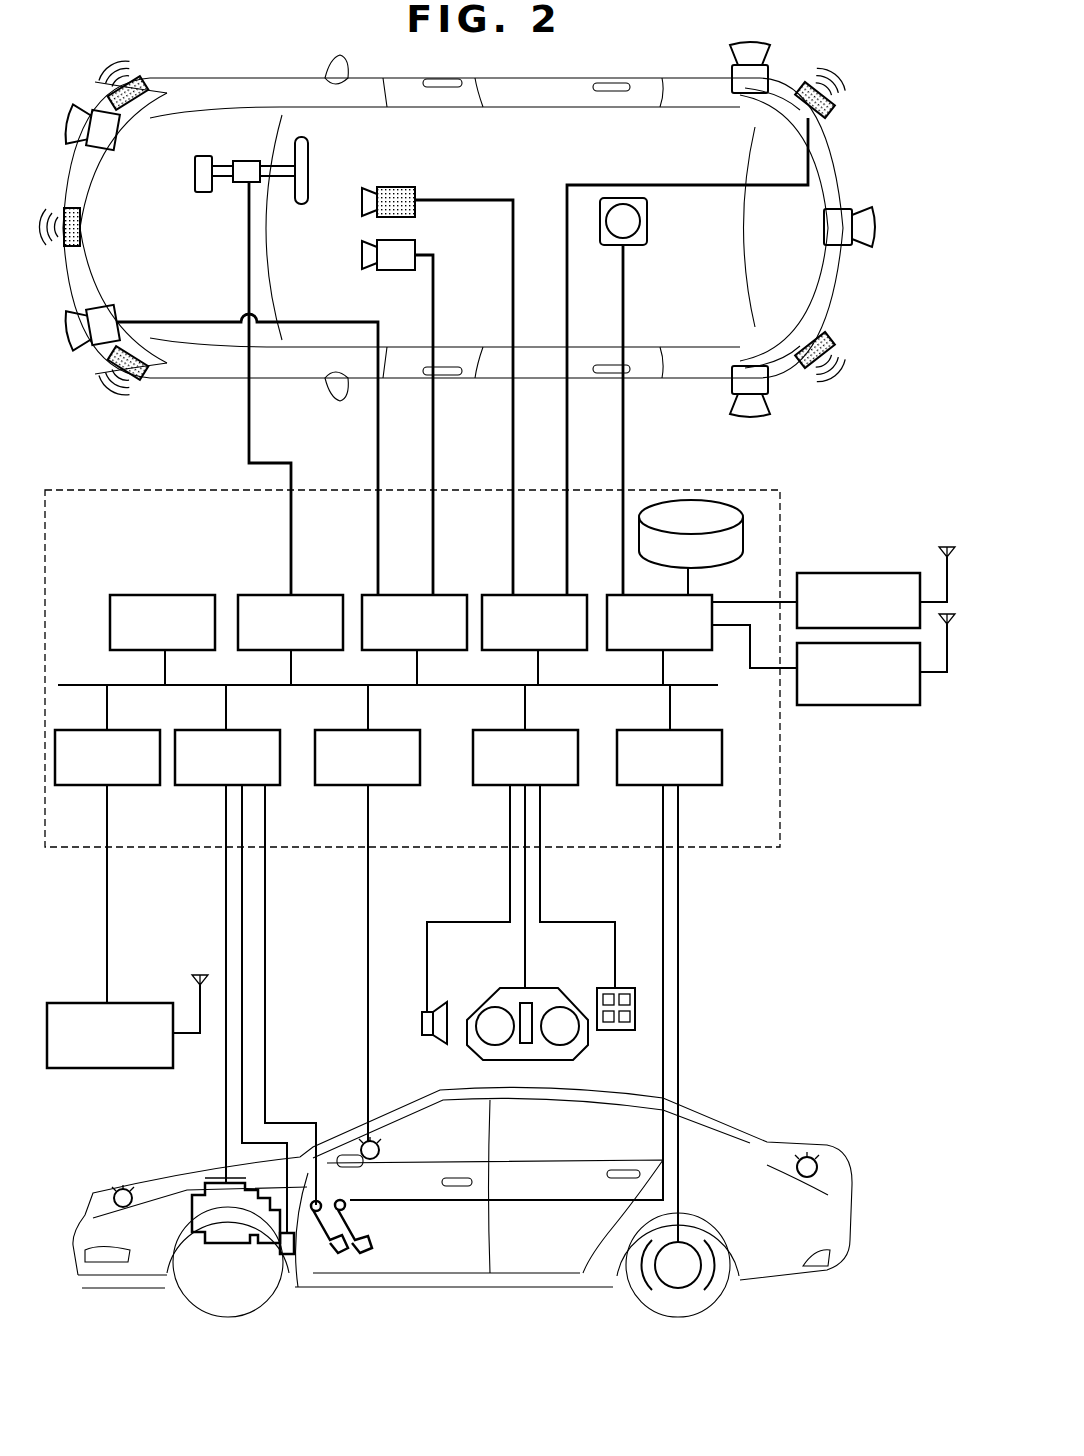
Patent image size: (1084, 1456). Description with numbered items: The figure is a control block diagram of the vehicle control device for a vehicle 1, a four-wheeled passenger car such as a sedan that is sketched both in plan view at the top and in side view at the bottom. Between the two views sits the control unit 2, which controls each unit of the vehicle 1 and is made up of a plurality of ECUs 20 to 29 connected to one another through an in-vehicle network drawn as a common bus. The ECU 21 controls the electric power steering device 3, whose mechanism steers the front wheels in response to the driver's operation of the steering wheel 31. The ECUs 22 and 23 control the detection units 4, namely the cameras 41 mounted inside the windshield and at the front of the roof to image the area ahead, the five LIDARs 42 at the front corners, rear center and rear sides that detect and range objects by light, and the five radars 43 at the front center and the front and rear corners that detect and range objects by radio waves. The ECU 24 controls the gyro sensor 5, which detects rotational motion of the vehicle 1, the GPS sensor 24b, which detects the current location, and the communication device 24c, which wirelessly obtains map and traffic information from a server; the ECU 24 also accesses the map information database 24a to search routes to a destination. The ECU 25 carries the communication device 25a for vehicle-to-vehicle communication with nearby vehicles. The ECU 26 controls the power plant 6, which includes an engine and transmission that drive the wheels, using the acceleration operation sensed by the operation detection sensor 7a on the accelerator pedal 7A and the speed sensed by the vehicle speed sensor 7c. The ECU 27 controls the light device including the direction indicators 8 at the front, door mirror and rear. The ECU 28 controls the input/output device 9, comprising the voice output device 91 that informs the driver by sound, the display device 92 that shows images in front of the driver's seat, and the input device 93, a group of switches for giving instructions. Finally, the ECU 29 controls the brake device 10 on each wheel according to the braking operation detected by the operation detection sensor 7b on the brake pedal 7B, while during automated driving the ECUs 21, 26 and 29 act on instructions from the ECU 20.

The vehicle 1 is at (860, 136).
The control unit 2 is at (750, 855).
The electric power steering device 3 is at (204, 194).
The steering wheel 31 is at (302, 205).
The detection units 4 is at (88, 84).
The detection unit (camera) 41 is at (420, 215).
The detection unit (LIDAR) 42 is at (116, 152).
The detection unit (radar) 43 is at (137, 108).
The gyro sensor 5 is at (650, 218).
The power plant 6 is at (196, 1183).
The operation detection sensor 7a is at (318, 1200).
The operation detection sensor 7b is at (345, 1203).
The vehicle speed sensor 7c is at (288, 1255).
The accelerator pedal 7A is at (347, 1250).
The brake pedal 7B is at (372, 1238).
The direction indicator 8 is at (113, 1193).
The input/output device 9 is at (455, 1062).
The voice output device 91 is at (420, 1020).
The display device 92 is at (488, 998).
The input device 93 is at (612, 1030).
The brake device 10 is at (680, 1288).
The ECU 20 is at (192, 593).
The ECU 21 is at (319, 593).
The ECU 22 is at (411, 593).
The ECU 23 is at (536, 593).
The ECU 24 is at (609, 593).
The map information database 24a is at (690, 500).
The GPS sensor 24b is at (862, 573).
The communication device 24c is at (848, 706).
The ECU 25 is at (140, 787).
The communication device 25a is at (102, 1070).
The ECU 26 is at (207, 787).
The ECU 27 is at (397, 787).
The ECU 28 is at (560, 787).
The ECU 29 is at (700, 787).